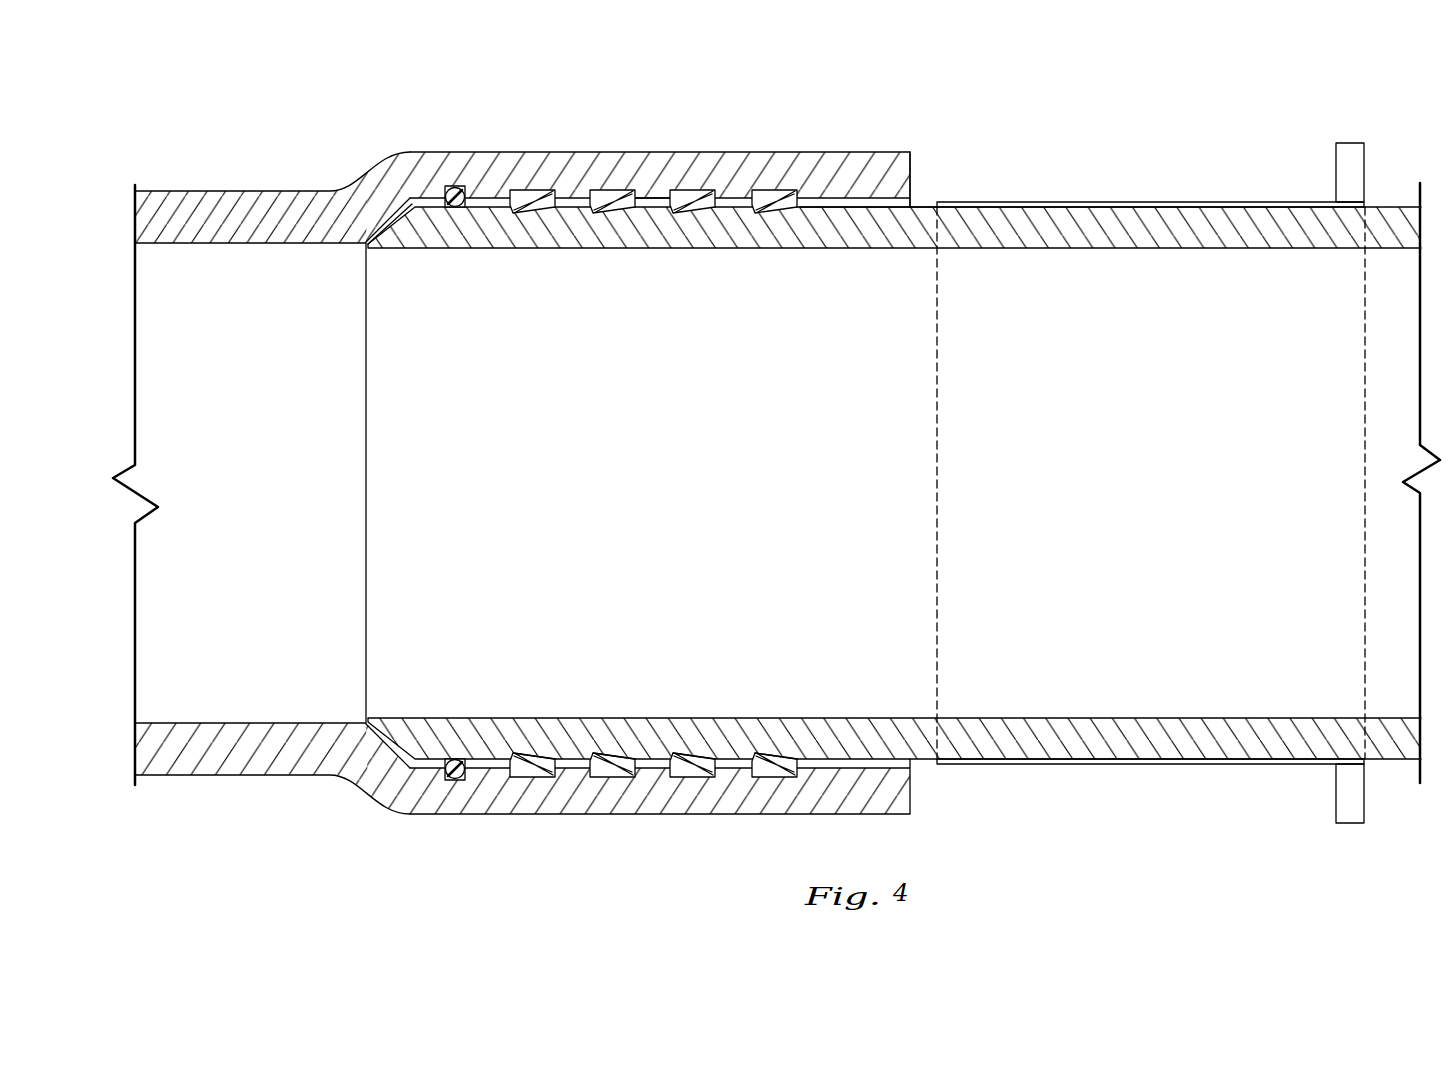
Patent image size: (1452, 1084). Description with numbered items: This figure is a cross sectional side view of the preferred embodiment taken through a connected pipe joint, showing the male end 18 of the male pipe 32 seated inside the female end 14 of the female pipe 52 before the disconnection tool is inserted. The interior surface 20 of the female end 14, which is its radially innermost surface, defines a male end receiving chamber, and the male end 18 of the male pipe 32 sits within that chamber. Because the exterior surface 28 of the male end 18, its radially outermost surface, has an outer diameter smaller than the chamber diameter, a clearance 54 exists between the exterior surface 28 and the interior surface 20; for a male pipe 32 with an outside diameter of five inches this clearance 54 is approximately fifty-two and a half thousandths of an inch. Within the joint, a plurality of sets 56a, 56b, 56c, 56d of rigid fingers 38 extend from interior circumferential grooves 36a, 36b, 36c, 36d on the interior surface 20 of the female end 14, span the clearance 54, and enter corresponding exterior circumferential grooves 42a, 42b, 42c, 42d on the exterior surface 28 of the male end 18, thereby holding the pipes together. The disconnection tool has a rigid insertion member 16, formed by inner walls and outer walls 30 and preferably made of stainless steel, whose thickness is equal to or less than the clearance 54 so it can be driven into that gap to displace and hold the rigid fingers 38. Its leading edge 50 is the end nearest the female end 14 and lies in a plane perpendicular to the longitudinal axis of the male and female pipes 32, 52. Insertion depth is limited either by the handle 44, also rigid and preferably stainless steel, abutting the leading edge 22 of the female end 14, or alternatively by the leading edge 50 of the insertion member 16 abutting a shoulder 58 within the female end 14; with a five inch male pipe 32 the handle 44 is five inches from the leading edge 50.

The female end 14 is at (598, 150).
The insertion member 16 is at (1083, 768).
The male end 18 is at (645, 488).
The interior surface 20 is at (838, 208).
The leading edge 22 is at (912, 170).
The exterior surface 28 is at (657, 212).
The outer walls 30 is at (1122, 201).
The male pipe 32 is at (1382, 183).
The interior circumferential groove 36a is at (773, 780).
The interior circumferential groove 36b is at (691, 780).
The interior circumferential groove 36c is at (611, 780).
The interior circumferential groove 36d is at (527, 780).
The rigid fingers 38 is at (550, 213).
The exterior circumferential groove 42a is at (775, 750).
The exterior circumferential groove 42b is at (693, 750).
The exterior circumferential groove 42c is at (612, 750).
The exterior circumferential groove 42d is at (531, 750).
The handle 44 is at (1327, 805).
The leading edge 50 is at (937, 424).
The female pipe 52 is at (233, 147).
The clearance 54 is at (922, 199).
The set of rigid fingers 56a is at (786, 757).
The set of rigid fingers 56b is at (704, 757).
The set of rigid fingers 56c is at (624, 757).
The set of rigid fingers 56d is at (541, 757).
The shoulder 58 is at (377, 224).